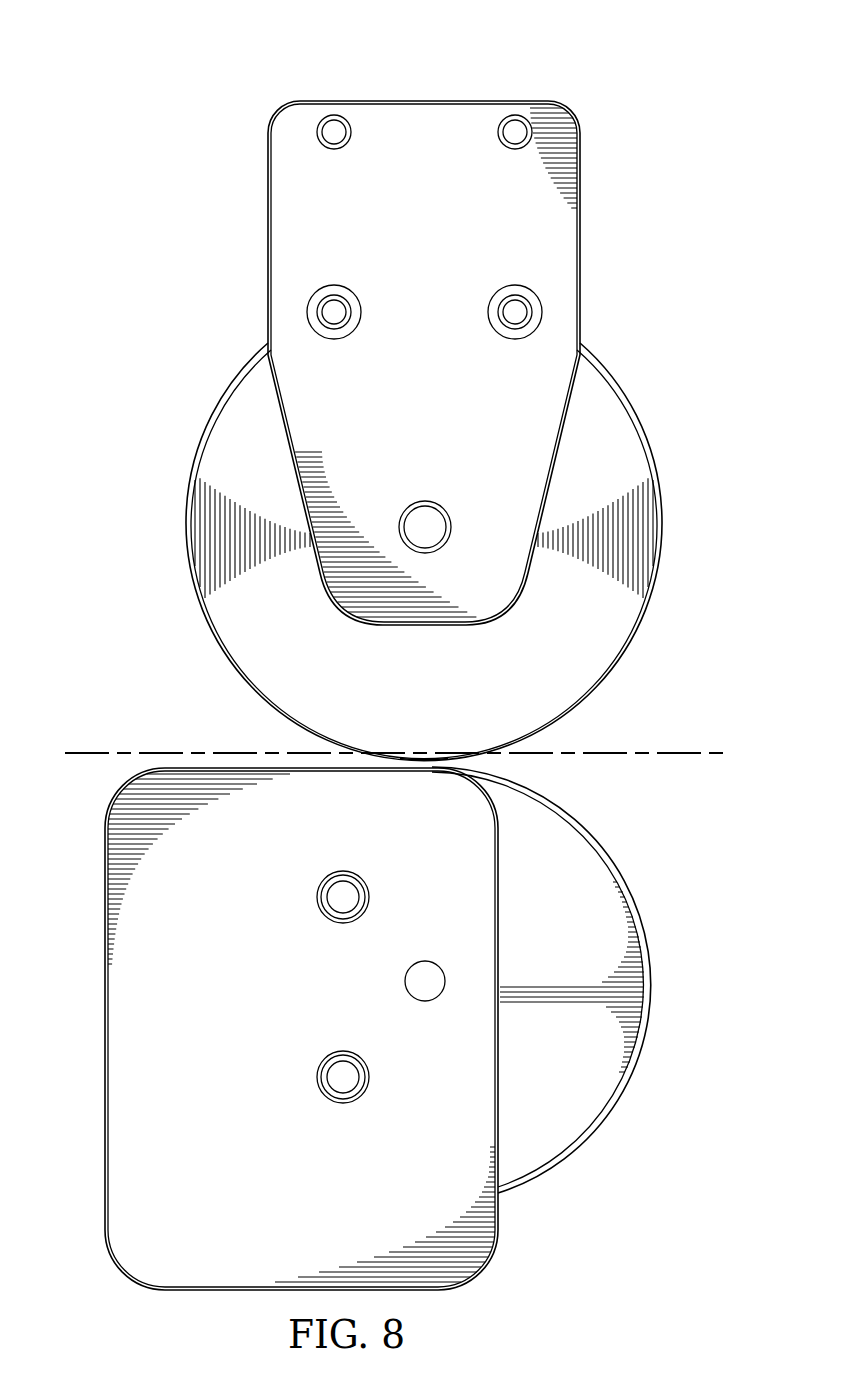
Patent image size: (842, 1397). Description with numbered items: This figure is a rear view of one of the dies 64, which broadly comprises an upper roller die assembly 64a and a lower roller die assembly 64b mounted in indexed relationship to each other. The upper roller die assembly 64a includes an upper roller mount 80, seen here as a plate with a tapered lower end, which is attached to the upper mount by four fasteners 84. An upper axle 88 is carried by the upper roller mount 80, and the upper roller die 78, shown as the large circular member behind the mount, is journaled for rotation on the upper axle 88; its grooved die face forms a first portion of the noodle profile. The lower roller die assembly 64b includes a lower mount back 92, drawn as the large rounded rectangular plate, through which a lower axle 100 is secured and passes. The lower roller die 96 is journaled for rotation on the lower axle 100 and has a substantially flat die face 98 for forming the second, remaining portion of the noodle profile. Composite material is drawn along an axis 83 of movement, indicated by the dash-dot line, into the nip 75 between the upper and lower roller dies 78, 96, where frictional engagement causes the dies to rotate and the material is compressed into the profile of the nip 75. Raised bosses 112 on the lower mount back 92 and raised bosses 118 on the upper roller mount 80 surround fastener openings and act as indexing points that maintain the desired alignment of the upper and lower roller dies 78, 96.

The die 64 is at (122, 74).
The upper roller die assembly 64a is at (667, 192).
The lower roller die assembly 64b is at (715, 834).
The nip 75 is at (590, 731).
The upper roller die 78 is at (406, 698).
The upper roller mount 80 is at (268, 186).
The axis of movement 83 is at (623, 757).
The fasteners 84 is at (331, 116).
The upper axle 88 is at (428, 501).
The lower mount back 92 is at (105, 1031).
The lower roller die 96 is at (567, 921).
The flat die face 98 is at (610, 1126).
The lower axle 100 is at (428, 1002).
The raised bosses 112 is at (317, 896).
The raised bosses 118 is at (334, 285).